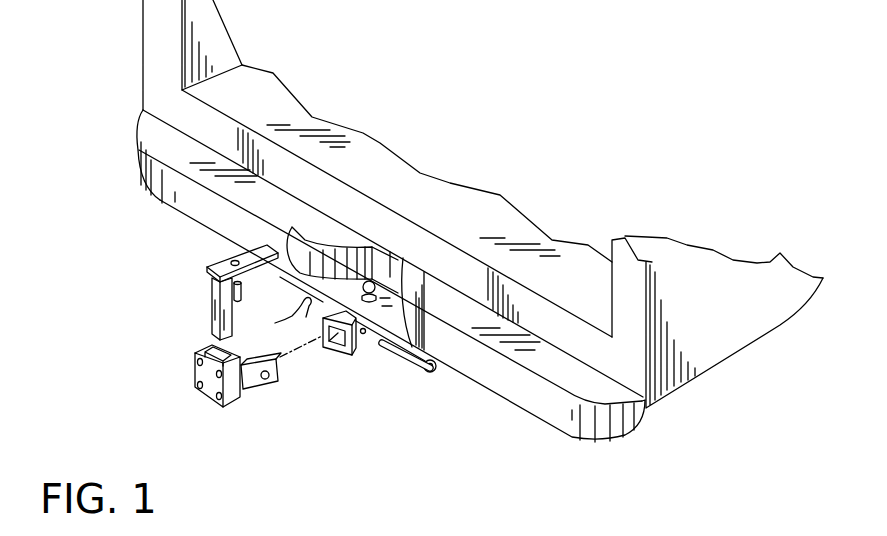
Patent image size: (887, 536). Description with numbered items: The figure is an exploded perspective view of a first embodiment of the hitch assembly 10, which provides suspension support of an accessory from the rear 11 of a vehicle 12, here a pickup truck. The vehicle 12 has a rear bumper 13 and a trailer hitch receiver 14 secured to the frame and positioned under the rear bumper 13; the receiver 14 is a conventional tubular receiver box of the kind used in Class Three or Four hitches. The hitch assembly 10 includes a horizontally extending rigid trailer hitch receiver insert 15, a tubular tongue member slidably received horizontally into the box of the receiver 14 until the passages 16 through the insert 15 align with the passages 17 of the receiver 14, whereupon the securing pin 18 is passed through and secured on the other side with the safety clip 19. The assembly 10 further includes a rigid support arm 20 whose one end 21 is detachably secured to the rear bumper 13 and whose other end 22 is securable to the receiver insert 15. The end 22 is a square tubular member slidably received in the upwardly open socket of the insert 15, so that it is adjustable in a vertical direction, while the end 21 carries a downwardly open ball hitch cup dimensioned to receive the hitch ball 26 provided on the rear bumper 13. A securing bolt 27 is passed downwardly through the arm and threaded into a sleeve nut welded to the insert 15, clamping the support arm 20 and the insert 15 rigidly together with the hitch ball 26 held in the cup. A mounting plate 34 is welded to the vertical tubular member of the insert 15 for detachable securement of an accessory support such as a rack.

The hitch assembly 10 is at (148, 295).
The rear 11 is at (153, 70).
The vehicle 12 is at (720, 353).
The rear bumper 13 is at (165, 202).
The trailer hitch receiver 14 is at (328, 357).
The trailer hitch receiver insert 15 is at (258, 390).
The passages 16 is at (277, 387).
The passages 17 is at (368, 331).
The securing pin 18 is at (393, 353).
The safety clip 19 is at (277, 321).
The support arm 20 is at (210, 290).
The end 21 is at (290, 224).
The end 22 is at (213, 320).
The hitch ball 26 is at (380, 280).
The securing bolt 27 is at (220, 257).
The mounting plate 34 is at (193, 382).